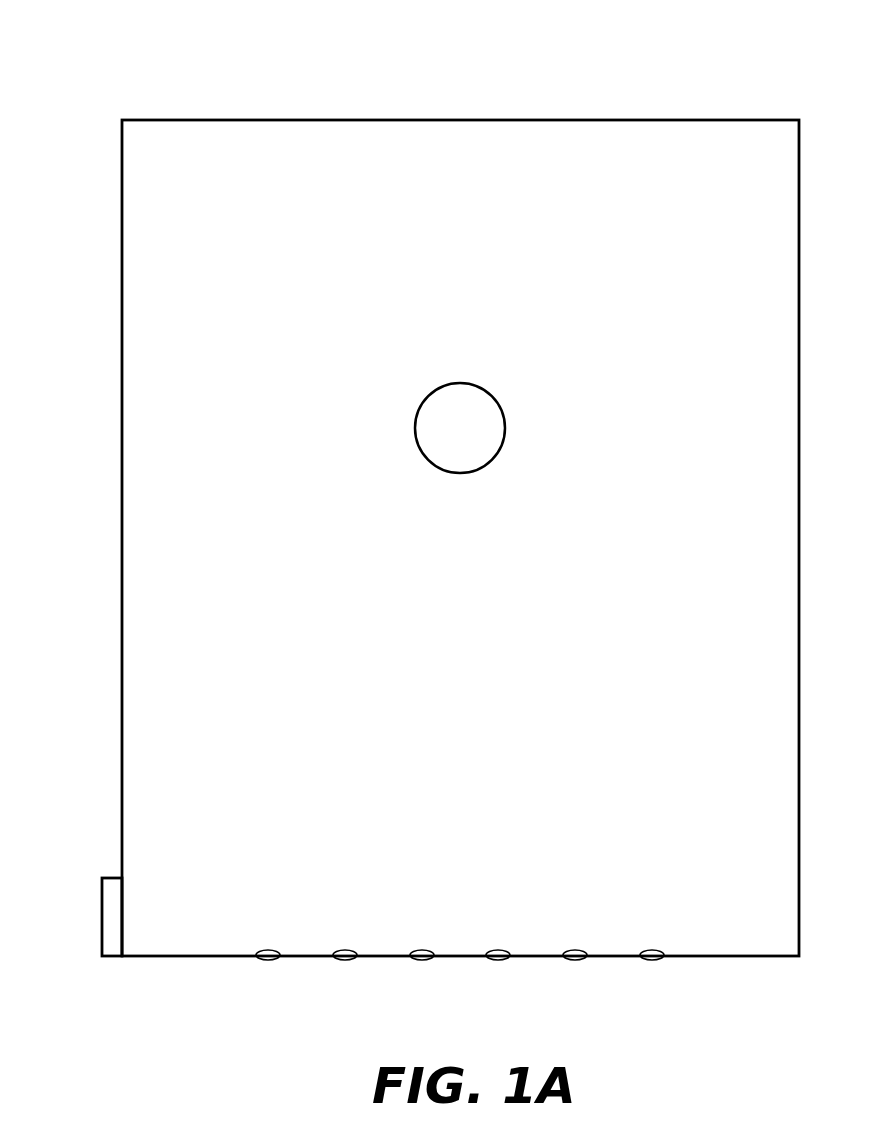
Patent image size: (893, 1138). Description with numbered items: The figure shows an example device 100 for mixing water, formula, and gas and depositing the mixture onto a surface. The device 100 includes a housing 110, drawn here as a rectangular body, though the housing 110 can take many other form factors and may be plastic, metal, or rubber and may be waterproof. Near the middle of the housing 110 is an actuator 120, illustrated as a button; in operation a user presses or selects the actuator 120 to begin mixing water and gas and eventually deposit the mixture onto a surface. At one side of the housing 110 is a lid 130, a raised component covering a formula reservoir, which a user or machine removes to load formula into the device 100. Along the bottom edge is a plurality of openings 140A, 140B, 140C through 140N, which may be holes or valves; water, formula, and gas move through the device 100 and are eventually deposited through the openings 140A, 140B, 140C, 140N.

The device 100 is at (101, 90).
The housing 110 is at (208, 120).
The actuator 120 is at (503, 402).
The lid 130 is at (102, 912).
The opening 140A is at (270, 961).
The opening 140B is at (347, 961).
The opening 140C is at (424, 961).
The opening 140N is at (654, 961).